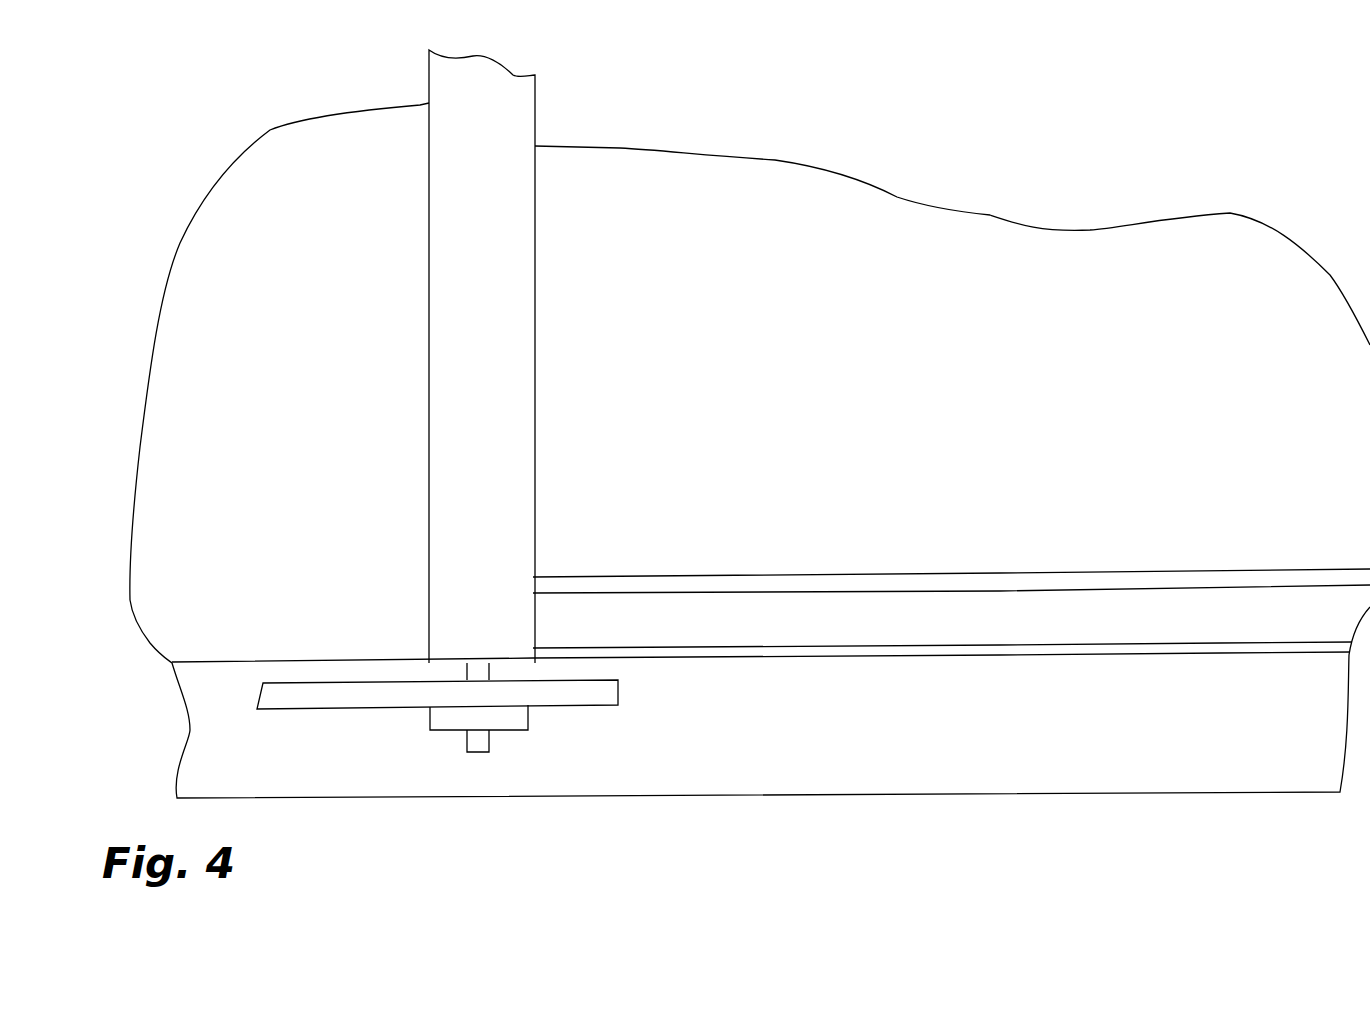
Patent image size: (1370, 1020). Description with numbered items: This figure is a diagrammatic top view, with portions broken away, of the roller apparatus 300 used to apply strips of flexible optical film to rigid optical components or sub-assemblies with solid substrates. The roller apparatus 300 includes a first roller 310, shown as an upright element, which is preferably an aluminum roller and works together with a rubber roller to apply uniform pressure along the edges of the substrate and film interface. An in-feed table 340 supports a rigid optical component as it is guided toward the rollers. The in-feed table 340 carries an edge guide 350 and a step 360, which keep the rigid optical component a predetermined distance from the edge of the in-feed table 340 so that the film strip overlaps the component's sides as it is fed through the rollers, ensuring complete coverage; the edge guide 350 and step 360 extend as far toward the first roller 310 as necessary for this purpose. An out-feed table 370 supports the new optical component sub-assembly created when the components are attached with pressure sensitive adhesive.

The roller apparatus 300 is at (711, 417).
The first roller 310 is at (473, 394).
The in-feed table 340 is at (952, 242).
The edge guide 350 is at (771, 702).
The step 360 is at (951, 532).
The out-feed table 370 is at (259, 383).